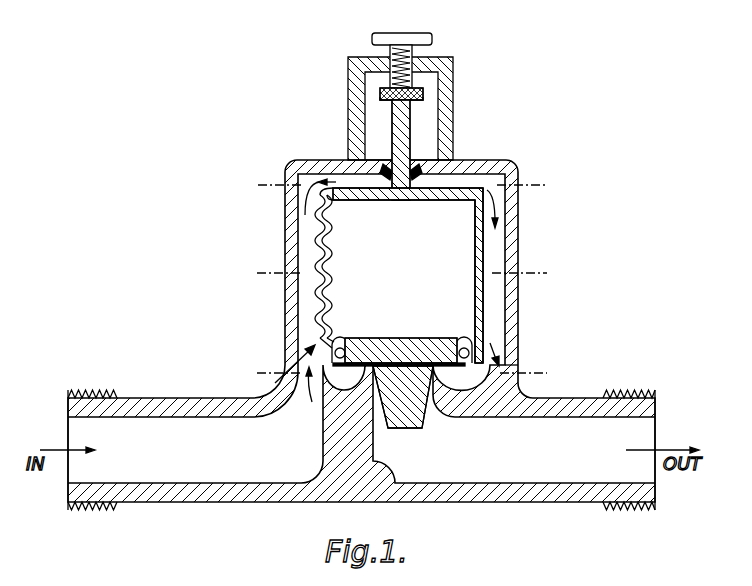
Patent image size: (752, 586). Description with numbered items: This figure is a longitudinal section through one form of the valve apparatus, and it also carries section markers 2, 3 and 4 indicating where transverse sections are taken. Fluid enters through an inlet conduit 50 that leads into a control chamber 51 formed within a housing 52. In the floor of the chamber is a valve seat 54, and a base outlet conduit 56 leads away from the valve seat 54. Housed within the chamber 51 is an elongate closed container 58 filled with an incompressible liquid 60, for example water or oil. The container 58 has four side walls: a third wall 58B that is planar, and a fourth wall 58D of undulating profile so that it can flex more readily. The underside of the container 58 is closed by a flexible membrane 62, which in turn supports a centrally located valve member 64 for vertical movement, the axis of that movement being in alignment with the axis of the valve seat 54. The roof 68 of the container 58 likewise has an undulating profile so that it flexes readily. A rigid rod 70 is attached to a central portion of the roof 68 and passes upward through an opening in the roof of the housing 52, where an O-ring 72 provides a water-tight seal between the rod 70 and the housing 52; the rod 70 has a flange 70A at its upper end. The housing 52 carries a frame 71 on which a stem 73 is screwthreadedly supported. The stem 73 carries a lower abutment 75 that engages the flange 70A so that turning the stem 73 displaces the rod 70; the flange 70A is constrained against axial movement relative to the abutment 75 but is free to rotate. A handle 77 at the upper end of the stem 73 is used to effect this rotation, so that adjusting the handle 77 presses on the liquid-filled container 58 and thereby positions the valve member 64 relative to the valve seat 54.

The inlet conduit 50 is at (190, 456).
The control chamber 51 is at (510, 372).
The housing 52 is at (515, 209).
The valve seat 54 is at (442, 368).
The outlet conduit 56 is at (574, 456).
The elongate closed container 58 is at (292, 372).
The third wall 58B is at (483, 303).
The fourth wall 58D is at (318, 293).
The incompressible liquid 60 is at (411, 252).
The flexible membrane 62 is at (465, 340).
The valve member 64 is at (388, 338).
The roof 68 is at (460, 193).
The rigid rod 70 is at (404, 133).
The flange 70A is at (383, 97).
The frame 71 is at (453, 63).
The O-ring 72 is at (385, 168).
The stem 73 is at (390, 47).
The lower abutment 75 is at (418, 94).
The handle 77 is at (422, 33).
The section line 2- 2 is at (268, 180).
The section line 3- 3 is at (266, 268).
The section line 4- 4 is at (268, 368).